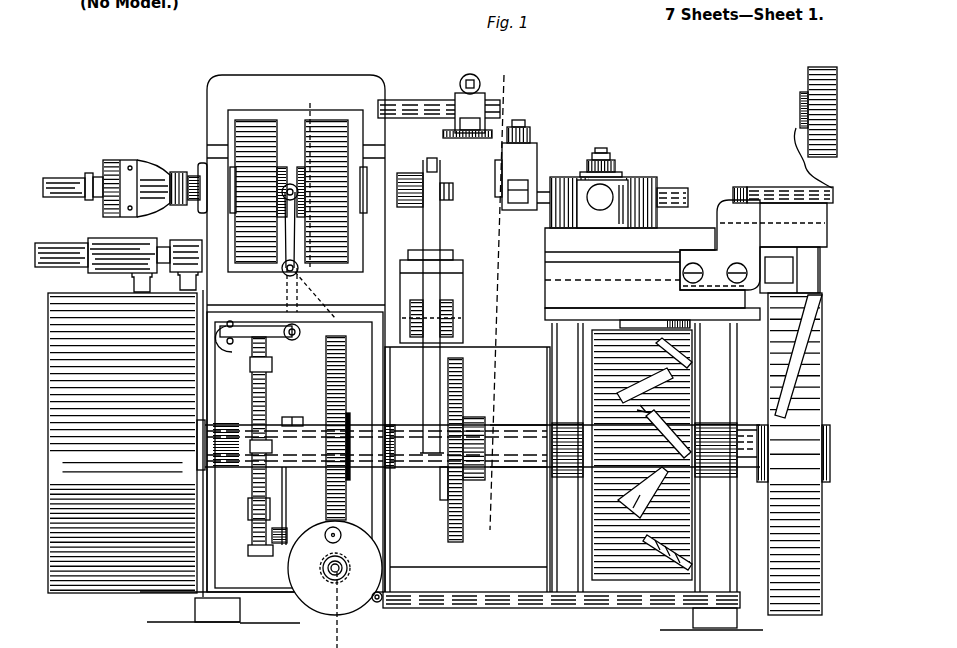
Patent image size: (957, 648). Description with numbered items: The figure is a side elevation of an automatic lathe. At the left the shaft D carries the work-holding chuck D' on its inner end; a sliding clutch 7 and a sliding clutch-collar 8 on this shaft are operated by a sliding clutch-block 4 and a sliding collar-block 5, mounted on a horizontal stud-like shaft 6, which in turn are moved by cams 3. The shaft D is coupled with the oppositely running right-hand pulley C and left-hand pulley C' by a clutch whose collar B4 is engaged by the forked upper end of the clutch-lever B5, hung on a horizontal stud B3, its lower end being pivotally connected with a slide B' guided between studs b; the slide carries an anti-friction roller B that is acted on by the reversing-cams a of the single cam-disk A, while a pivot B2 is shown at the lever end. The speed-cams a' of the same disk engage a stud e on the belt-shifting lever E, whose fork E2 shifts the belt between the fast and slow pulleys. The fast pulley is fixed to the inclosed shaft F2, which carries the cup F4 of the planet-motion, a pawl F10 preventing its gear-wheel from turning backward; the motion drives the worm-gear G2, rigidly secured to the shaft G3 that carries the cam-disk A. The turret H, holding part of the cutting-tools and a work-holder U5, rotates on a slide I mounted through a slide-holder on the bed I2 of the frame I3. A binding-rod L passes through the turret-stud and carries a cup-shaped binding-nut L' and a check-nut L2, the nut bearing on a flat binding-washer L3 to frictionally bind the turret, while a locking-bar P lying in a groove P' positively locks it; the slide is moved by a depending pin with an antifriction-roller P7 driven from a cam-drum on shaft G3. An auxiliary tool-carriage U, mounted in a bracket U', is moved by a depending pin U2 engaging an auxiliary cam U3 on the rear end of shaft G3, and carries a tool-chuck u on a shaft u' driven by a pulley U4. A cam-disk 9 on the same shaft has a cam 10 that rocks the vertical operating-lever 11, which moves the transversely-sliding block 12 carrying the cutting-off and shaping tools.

The shaft D is at (73, 181).
The sliding clutch 7 is at (127, 171).
The sliding clutch-collar 8 is at (181, 172).
The stud-like shaft 6 is at (61, 250).
The sliding clutch-block 4 is at (137, 250).
The sliding collar-block 5 is at (183, 252).
The left-hand pulley C' is at (253, 191).
The right-hand pulley C is at (336, 191).
The clutch collar B4 is at (291, 176).
The clutch-lever B5 is at (282, 167).
The pivot B2 is at (298, 296).
The horizontal stud B3 is at (283, 272).
The reversing-cams a is at (266, 304).
The slide B' is at (262, 342).
The studs b is at (224, 343).
The cam-disk A is at (268, 397).
The anti-friction-roller B is at (279, 368).
The speed-cams a' is at (220, 459).
The stud e is at (288, 537).
The belt-shifting lever E is at (284, 492).
The fork E2 is at (294, 417).
The worm-gear G2 is at (347, 393).
The work-holding chuck D' is at (425, 175).
The transversely-sliding block 12 is at (447, 257).
The operating-lever 11 is at (427, 399).
The cam-disk 9 is at (448, 519).
The cam 10 is at (440, 490).
The shaft G3 is at (512, 446).
The turret H is at (632, 181).
The binding-washer L3 is at (624, 177).
The binding-nut L' is at (588, 161).
The check-nut L2 is at (611, 156).
The binding-rod L is at (601, 141).
The work-holder U5 is at (670, 190).
The slide I is at (645, 268).
The bed I2 is at (652, 305).
The bracket U' is at (720, 245).
The tool-chuck u is at (740, 183).
The auxiliary tool-carriage U is at (776, 205).
The depending pin U2 is at (806, 273).
The auxiliary cam U3 is at (795, 454).
The pulley U4 is at (806, 110).
The shaft u' is at (801, 140).
The frame I3 is at (644, 457).
The locking-bar P is at (642, 455).
The antifriction-roller P7 is at (684, 321).
The groove P' is at (645, 381).
The cup F4 is at (335, 568).
The inclosed shaft F2 is at (343, 566).
The pawl F10 is at (380, 603).
The cams 3 is at (328, 610).